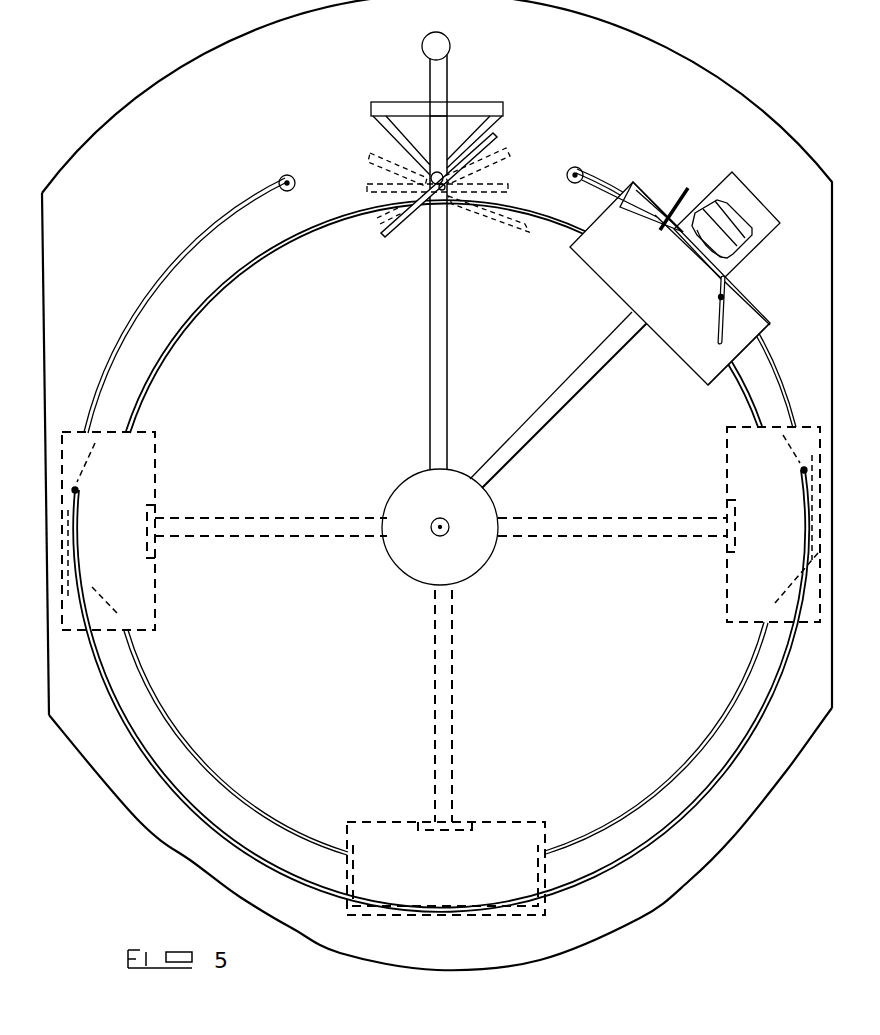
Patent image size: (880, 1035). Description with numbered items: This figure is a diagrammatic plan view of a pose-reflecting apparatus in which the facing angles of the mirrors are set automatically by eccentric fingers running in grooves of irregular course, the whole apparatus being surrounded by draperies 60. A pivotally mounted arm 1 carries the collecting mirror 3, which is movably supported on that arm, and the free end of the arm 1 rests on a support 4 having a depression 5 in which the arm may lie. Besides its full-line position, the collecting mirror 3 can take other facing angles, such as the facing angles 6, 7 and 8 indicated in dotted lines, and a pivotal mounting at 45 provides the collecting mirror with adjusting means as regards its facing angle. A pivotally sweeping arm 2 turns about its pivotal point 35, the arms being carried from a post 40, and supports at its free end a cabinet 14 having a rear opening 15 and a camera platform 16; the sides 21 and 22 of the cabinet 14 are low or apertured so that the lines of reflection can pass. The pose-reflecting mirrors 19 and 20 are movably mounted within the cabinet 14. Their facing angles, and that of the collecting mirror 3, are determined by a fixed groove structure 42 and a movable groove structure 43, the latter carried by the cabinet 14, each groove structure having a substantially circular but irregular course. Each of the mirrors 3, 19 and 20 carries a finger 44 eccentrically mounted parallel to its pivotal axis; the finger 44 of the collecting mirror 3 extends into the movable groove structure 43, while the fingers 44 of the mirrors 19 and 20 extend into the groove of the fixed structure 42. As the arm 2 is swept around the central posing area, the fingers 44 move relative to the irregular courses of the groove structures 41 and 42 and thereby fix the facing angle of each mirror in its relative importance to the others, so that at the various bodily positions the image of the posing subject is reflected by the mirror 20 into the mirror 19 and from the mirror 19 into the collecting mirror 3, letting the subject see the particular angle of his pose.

The pivotally mounted arm 1 is at (430, 300).
The pivotally sweeping arm 2 is at (575, 398).
The collecting mirror 3 is at (510, 187).
The support 4 is at (505, 108).
The depression 5 is at (443, 110).
The facing angle 6 is at (498, 135).
The facing angle 7 is at (506, 158).
The facing angle 8 is at (511, 227).
The cabinet 14 is at (773, 323).
The rear opening 15 is at (718, 268).
The camera platform 16 is at (772, 242).
The pose-reflecting mirror 19 is at (638, 223).
The pose-reflecting mirror 20 is at (717, 323).
The side of cabinet 21 is at (605, 217).
The side of cabinet 22 is at (742, 357).
The pivotal point 35 is at (449, 526).
The post 40 is at (437, 532).
The groove structure 41 is at (453, 47).
The fixed groove structure 42 is at (718, 777).
The movable groove structure 43 is at (693, 773).
The finger 44 is at (370, 171).
The pivotal mounting 45 is at (445, 197).
The draperies 60 is at (348, 960).